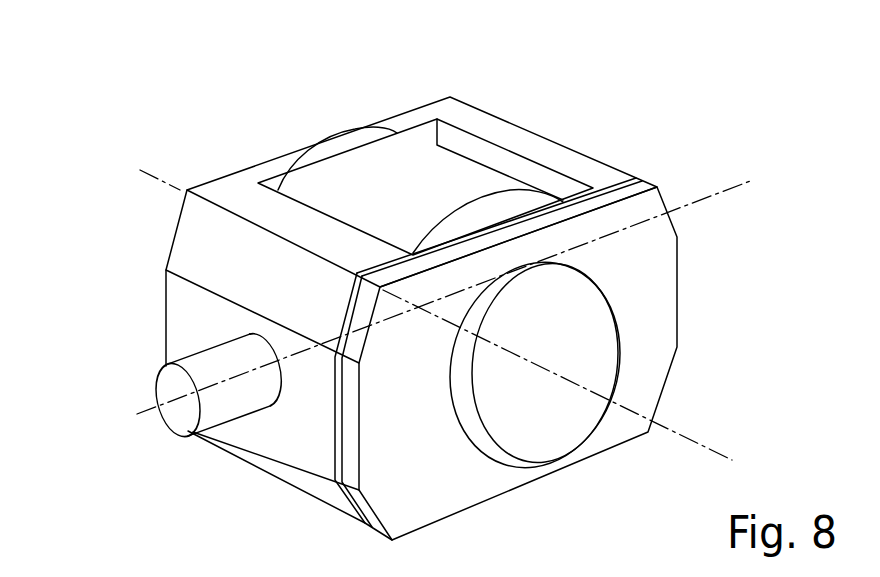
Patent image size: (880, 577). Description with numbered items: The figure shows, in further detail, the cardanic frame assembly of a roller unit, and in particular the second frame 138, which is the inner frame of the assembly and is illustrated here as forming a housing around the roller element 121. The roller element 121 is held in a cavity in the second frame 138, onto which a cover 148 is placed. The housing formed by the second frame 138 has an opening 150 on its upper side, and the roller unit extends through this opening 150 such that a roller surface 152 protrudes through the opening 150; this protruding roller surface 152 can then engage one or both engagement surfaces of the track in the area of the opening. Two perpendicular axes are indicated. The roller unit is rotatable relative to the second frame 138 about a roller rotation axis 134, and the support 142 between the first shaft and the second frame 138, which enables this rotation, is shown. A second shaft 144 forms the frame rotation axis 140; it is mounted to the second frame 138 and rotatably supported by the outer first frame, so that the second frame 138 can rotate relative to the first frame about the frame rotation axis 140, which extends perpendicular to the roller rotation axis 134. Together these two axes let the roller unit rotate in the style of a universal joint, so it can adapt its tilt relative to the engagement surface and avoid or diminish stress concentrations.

The roller element 121 is at (397, 158).
The roller rotation axis 134 is at (700, 445).
The second frame 138 is at (177, 307).
The frame rotation axis 140 is at (723, 190).
The support 142 is at (553, 435).
The second shaft 144 is at (172, 390).
The cover 148 is at (657, 280).
The opening 150 is at (498, 163).
The roller surface 152 is at (314, 182).